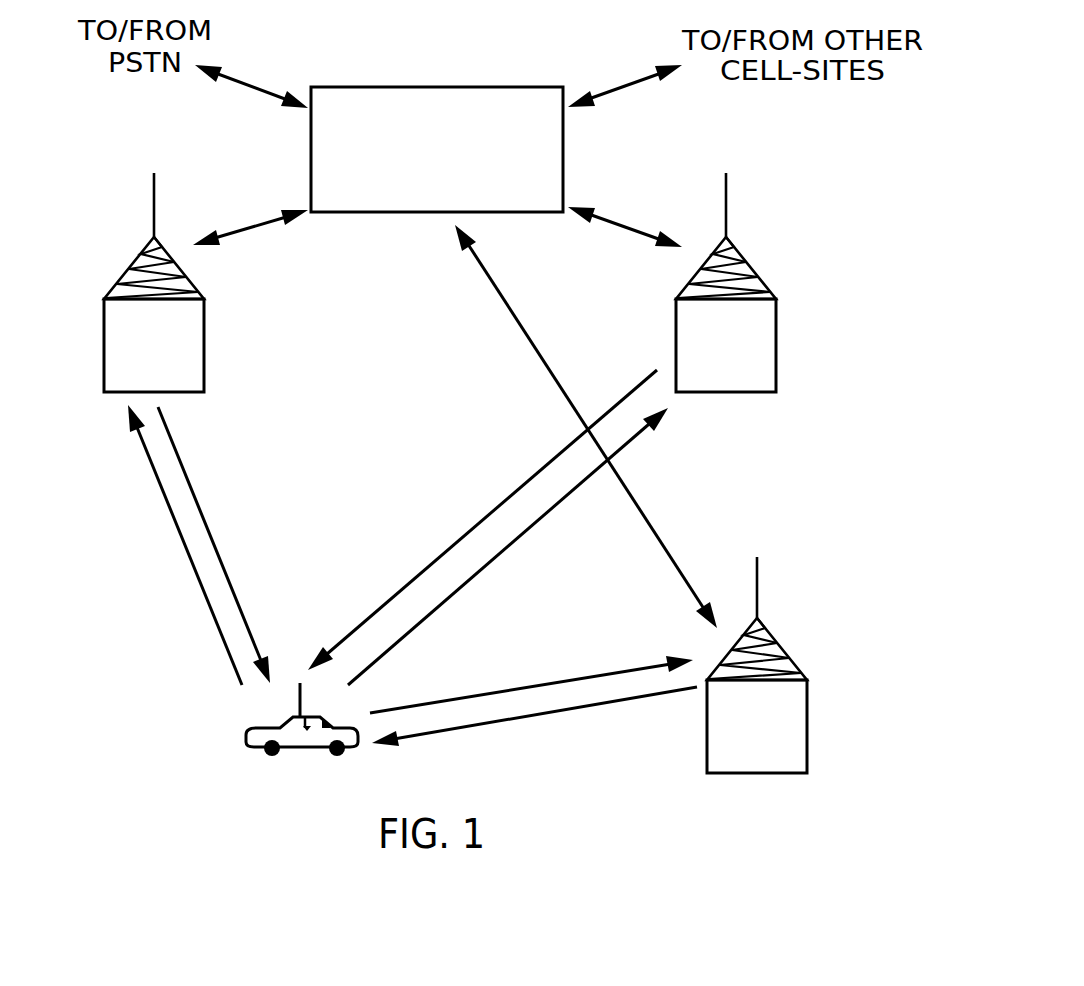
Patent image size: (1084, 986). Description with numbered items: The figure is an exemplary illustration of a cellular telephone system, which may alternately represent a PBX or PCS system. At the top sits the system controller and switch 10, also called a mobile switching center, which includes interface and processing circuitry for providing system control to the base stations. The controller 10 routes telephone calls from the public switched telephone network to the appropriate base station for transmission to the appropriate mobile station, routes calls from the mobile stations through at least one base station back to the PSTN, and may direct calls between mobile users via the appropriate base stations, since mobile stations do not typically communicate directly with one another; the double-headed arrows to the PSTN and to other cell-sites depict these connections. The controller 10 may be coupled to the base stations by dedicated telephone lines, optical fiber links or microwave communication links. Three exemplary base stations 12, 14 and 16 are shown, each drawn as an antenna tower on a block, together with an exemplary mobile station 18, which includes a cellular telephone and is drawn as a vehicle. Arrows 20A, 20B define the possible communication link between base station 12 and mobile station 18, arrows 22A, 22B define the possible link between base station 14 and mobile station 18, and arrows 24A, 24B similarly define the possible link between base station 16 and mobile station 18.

The system controller and switch 10 is at (482, 87).
The base station 12 is at (133, 264).
The base station 14 is at (748, 264).
The base station 16 is at (779, 645).
The mobile station 18 is at (317, 752).
The arrow 20A is at (183, 542).
The arrow 20B is at (223, 565).
The arrow 22A is at (451, 547).
The arrow 22B is at (483, 568).
The arrow 24A is at (467, 697).
The arrow 24B is at (483, 724).